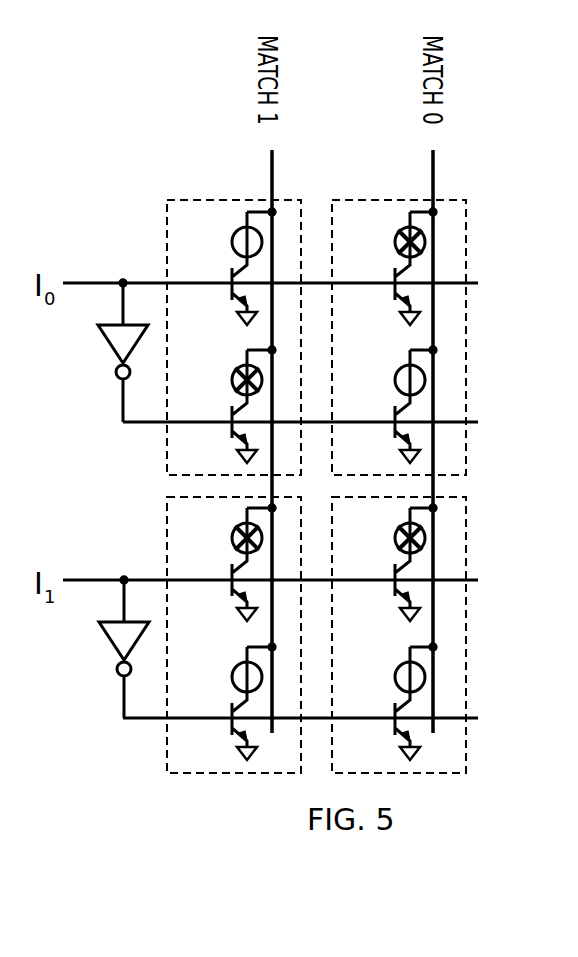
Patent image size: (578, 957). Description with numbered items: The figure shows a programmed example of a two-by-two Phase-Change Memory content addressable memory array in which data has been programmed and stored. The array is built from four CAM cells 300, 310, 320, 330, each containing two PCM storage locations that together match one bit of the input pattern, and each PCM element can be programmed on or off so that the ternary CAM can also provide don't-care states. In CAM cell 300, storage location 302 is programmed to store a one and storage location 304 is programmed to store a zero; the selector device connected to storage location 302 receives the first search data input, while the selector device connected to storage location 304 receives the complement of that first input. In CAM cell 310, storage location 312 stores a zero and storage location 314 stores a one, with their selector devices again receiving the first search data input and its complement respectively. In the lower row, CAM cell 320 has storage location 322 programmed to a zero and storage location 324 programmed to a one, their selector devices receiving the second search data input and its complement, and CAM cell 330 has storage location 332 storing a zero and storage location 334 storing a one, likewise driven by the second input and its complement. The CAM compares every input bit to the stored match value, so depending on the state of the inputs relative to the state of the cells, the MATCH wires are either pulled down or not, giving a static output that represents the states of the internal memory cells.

The CAM cell 300 is at (166, 228).
The storage location 302 is at (235, 231).
The storage location 304 is at (235, 369).
The CAM cell 310 is at (467, 224).
The storage location 312 is at (397, 231).
The storage location 314 is at (397, 369).
The CAM cell 320 is at (166, 520).
The storage location 322 is at (235, 527).
The storage location 324 is at (235, 666).
The CAM cell 330 is at (467, 516).
The storage location 332 is at (397, 527).
The storage location 334 is at (397, 666).